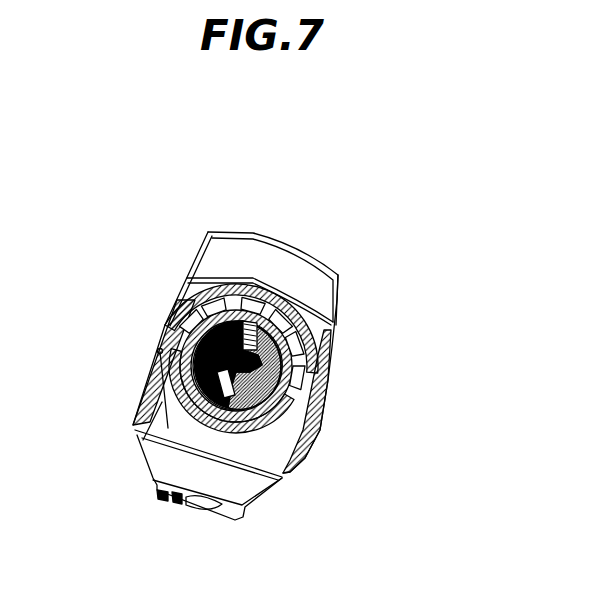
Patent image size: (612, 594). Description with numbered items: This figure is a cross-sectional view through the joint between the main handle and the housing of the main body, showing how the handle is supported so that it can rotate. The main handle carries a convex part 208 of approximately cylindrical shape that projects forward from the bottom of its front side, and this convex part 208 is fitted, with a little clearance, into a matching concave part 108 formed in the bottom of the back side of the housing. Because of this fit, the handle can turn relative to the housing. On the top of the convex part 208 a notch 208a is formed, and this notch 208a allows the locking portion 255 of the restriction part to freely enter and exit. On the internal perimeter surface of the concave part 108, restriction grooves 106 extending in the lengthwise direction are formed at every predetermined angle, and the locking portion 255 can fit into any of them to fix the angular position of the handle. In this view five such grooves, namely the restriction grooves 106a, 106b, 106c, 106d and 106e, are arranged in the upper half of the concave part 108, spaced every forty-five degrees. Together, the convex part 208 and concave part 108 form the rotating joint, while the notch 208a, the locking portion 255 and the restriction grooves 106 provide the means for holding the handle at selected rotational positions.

The restriction grooves 106 is at (244, 287).
The restriction groove 106a is at (149, 268).
The restriction groove 106b is at (203, 335).
The restriction groove 106c is at (256, 325).
The restriction groove 106d is at (308, 330).
The restriction groove 106e is at (330, 325).
The concave part 108 is at (322, 390).
The convex part 208 is at (272, 380).
The notch 208a is at (158, 350).
The locking portion 255 is at (143, 440).